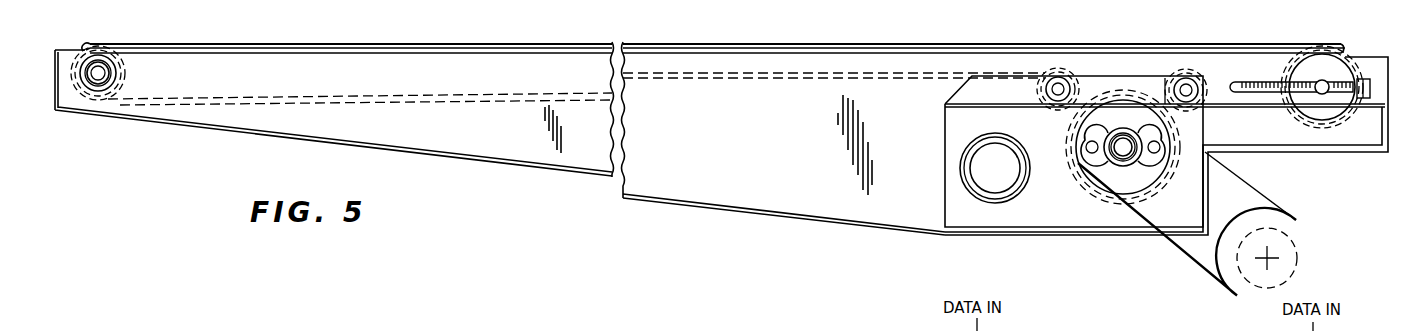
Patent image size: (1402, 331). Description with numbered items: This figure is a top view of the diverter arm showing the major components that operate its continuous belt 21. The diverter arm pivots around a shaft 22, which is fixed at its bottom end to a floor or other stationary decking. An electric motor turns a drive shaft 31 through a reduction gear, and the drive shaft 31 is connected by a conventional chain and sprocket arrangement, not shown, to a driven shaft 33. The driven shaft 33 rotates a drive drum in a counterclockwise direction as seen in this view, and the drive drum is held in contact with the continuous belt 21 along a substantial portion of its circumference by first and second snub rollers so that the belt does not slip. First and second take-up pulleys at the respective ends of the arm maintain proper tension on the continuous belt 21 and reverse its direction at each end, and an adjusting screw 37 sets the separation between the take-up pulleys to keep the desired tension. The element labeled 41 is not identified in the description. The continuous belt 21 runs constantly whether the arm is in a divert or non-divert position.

The continuous belt 21 is at (404, 44).
The shaft 22 is at (1000, 158).
The drive shaft 31 is at (1269, 256).
The driven shaft 33 is at (1124, 152).
The adjusting screw 37 is at (1366, 98).
The print head 41 is at (268, 330).